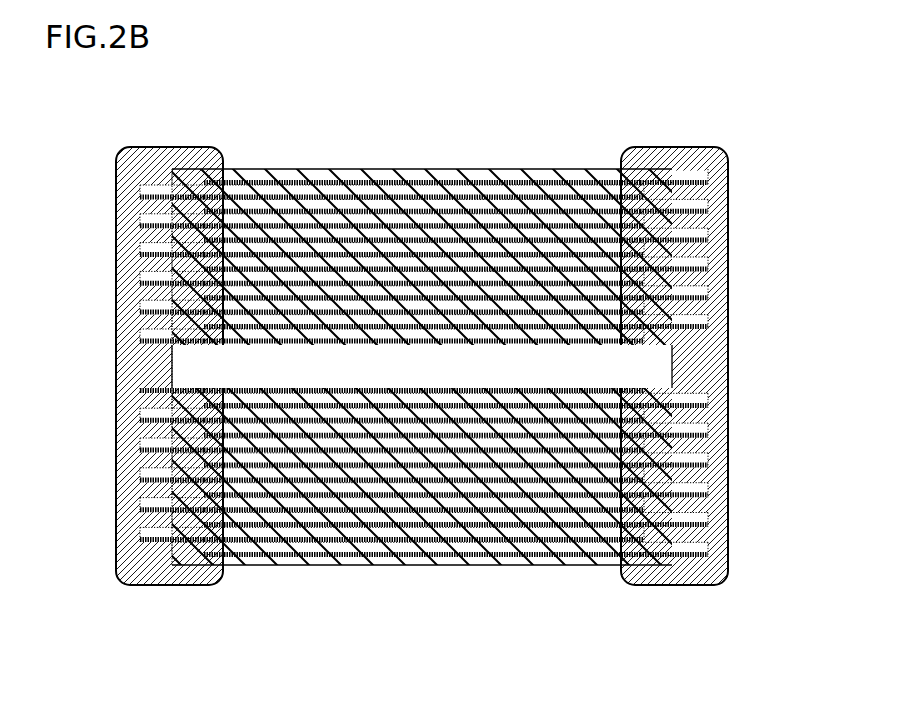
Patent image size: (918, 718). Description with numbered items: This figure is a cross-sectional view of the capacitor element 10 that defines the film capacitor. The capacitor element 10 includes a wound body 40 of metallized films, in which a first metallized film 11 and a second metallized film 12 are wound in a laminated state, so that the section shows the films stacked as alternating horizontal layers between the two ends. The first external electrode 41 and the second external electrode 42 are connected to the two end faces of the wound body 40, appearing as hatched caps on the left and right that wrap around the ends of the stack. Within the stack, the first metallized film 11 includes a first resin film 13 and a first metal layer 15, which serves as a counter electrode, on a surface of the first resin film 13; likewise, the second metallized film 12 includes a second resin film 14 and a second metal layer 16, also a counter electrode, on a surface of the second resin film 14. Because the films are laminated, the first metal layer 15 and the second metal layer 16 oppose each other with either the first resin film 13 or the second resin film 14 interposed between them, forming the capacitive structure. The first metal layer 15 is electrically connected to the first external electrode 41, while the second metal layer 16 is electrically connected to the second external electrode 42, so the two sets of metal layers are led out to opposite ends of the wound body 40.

The capacitor element 10 is at (95, 122).
The first metallized film 11 is at (392, 300).
The second metallized film 12 is at (456, 307).
The first resin film 13 is at (304, 213).
The first metal layer 15 is at (221, 213).
The second resin film 14 is at (548, 204).
The second metal layer 16 is at (618, 204).
The wound body 40 is at (398, 567).
The first external electrode 41 is at (124, 223).
The second external electrode 42 is at (722, 223).